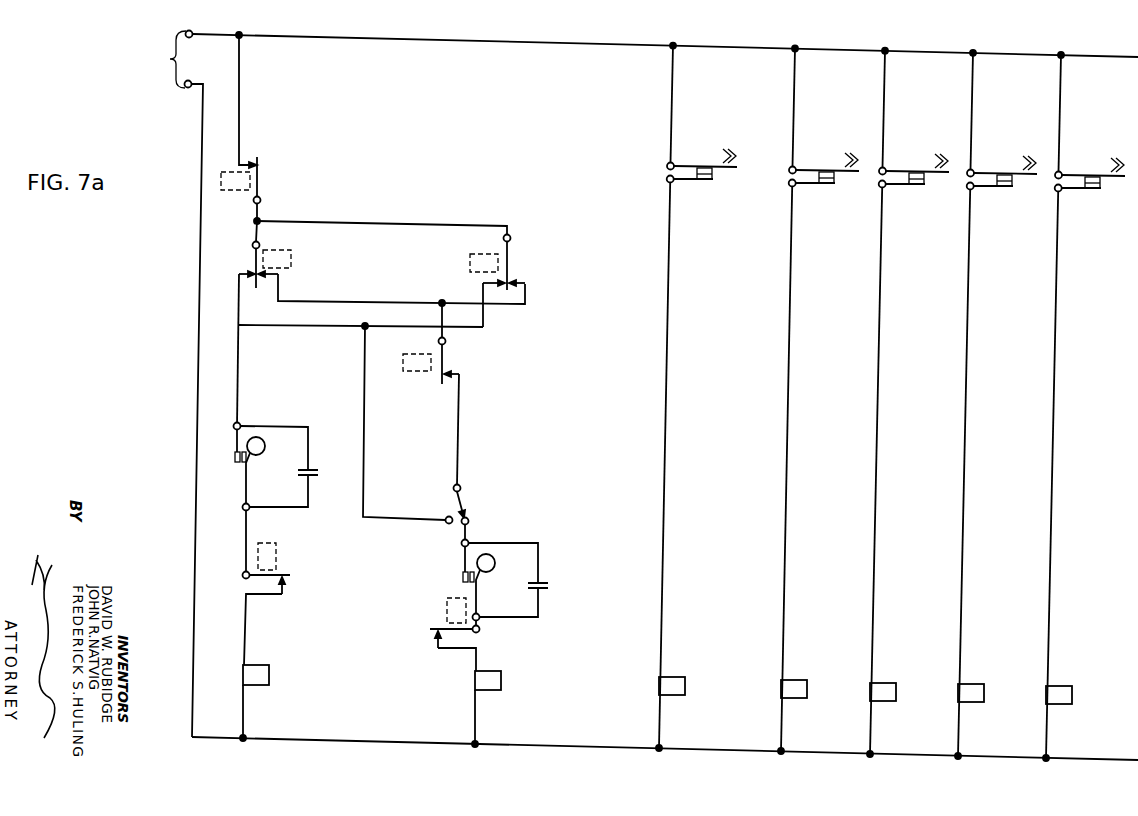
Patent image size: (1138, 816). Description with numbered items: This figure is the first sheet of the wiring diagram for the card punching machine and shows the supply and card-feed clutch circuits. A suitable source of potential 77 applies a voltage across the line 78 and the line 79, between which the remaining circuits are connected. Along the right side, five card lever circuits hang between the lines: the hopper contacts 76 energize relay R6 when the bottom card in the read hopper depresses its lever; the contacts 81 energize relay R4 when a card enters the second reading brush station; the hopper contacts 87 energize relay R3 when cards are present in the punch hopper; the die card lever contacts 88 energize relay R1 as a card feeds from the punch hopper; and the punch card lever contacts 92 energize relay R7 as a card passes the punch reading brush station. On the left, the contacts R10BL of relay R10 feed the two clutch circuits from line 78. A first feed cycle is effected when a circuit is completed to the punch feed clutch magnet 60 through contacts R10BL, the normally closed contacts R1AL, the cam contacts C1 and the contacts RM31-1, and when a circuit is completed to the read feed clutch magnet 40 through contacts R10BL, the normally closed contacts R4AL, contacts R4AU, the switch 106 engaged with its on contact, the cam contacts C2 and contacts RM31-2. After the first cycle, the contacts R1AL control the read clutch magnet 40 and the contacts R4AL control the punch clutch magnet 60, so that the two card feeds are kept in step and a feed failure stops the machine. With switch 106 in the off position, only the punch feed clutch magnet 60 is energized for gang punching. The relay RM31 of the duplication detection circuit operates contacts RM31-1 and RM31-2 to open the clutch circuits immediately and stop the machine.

The source of potential 77 is at (176, 384).
The line 78 is at (600, 43).
The line 79 is at (600, 747).
The contacts R10BL is at (257, 158).
The relay R10 is at (249, 190).
The relay R1 is at (277, 250).
The contacts R1AL is at (260, 283).
The relay R4 is at (474, 254).
The contacts R4AL is at (510, 278).
The contacts R4AU is at (443, 380).
The switch 106 is at (461, 491).
The cam contacts C1 is at (245, 468).
The relay RM31 is at (269, 543).
The contacts RM31-1 is at (286, 578).
The punch feed clutch magnet 60 is at (256, 665).
The cam contacts C2 is at (468, 581).
The contacts RM31-2 is at (432, 631).
The read feed clutch magnet 40 is at (495, 671).
The contacts 88 is at (714, 176).
The contacts 87 is at (836, 180).
The contacts 81 is at (926, 181).
The contacts 76 is at (1014, 183).
The contacts 92 is at (1102, 185).
The relay R3 is at (790, 680).
The relay R6 is at (966, 684).
The relay R7 is at (1056, 686).